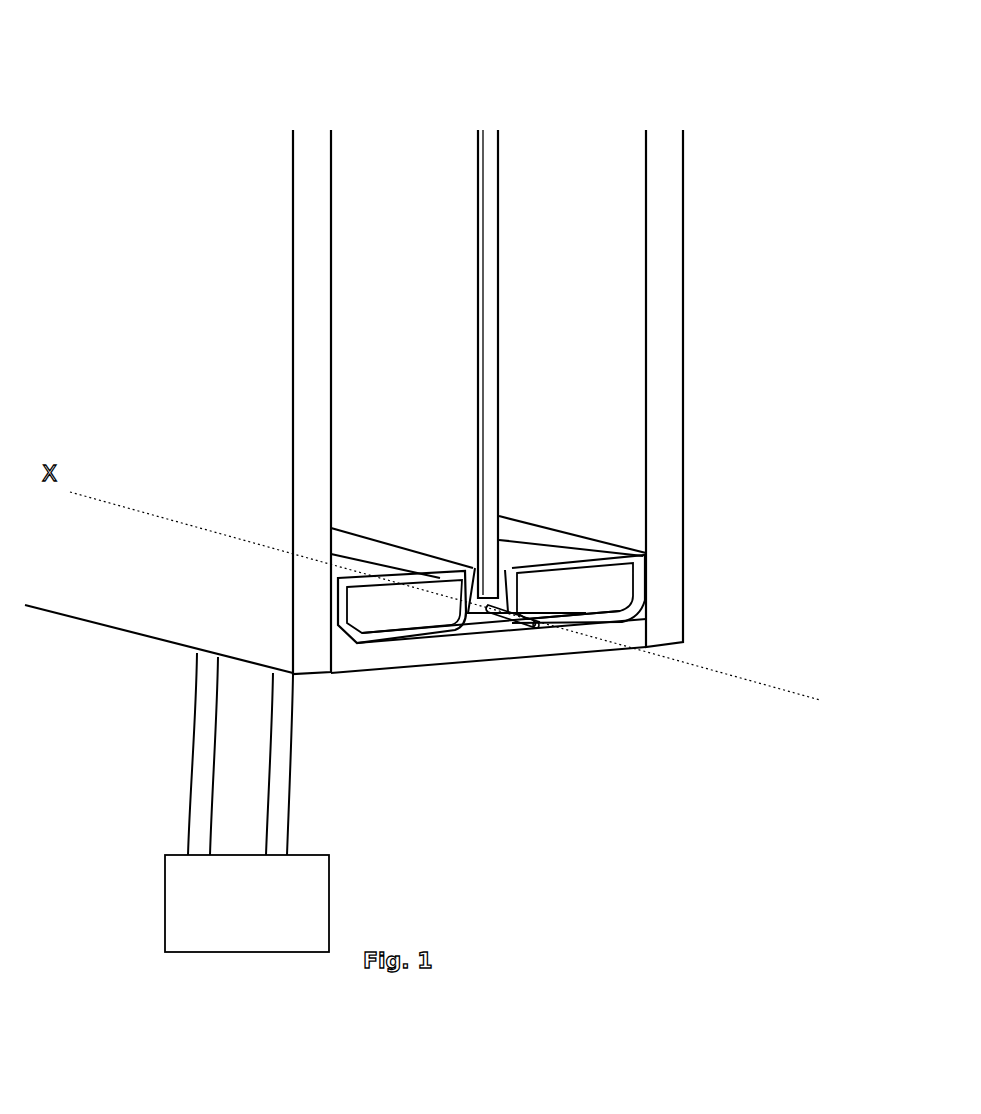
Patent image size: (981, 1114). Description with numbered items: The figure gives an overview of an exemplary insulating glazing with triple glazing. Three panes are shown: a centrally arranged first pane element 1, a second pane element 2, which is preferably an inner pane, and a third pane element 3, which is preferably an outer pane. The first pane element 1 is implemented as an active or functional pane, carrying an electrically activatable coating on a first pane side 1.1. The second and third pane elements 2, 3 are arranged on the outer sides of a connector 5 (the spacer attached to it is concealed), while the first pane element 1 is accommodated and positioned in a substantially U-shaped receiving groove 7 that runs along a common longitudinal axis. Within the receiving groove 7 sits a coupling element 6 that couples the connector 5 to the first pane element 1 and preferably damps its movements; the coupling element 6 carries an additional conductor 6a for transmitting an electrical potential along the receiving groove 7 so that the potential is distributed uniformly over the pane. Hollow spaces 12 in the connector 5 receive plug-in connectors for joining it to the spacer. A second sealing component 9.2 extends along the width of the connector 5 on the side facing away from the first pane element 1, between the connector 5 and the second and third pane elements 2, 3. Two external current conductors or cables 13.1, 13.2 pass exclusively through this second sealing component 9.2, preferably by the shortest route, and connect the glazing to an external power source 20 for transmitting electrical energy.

The first pane element 1 is at (488, 263).
The first pane side 1.1 is at (406, 213).
The second pane element 2 is at (309, 212).
The third pane element 3 is at (660, 215).
The connector 5 is at (646, 537).
The coupling element 6 is at (505, 565).
The additional conductor 6a is at (525, 565).
The receiving groove 7 is at (515, 630).
The second sealing component 9.2 is at (437, 650).
The hollow spaces 12 is at (437, 605).
The external current conductor 13.1 is at (282, 810).
The external current conductor 13.2 is at (207, 742).
The external power source 20 is at (247, 903).